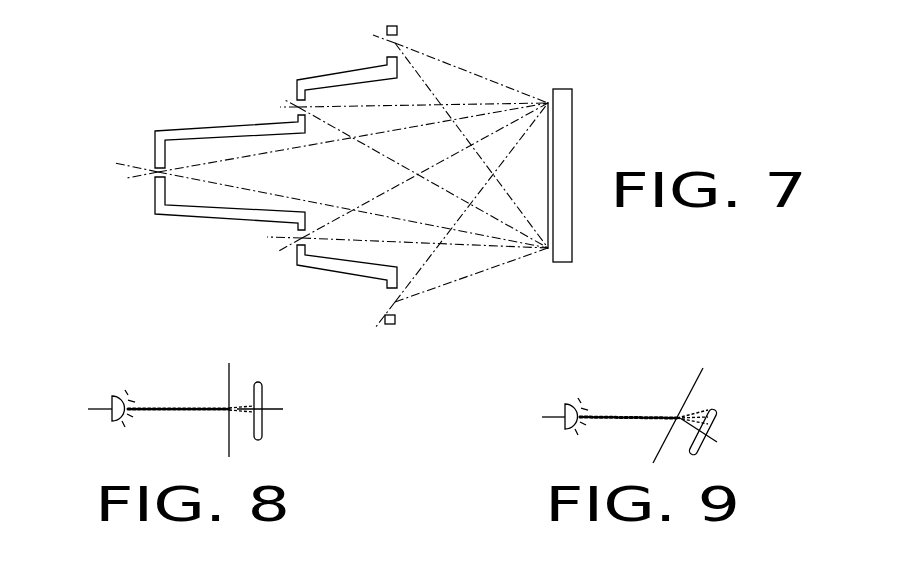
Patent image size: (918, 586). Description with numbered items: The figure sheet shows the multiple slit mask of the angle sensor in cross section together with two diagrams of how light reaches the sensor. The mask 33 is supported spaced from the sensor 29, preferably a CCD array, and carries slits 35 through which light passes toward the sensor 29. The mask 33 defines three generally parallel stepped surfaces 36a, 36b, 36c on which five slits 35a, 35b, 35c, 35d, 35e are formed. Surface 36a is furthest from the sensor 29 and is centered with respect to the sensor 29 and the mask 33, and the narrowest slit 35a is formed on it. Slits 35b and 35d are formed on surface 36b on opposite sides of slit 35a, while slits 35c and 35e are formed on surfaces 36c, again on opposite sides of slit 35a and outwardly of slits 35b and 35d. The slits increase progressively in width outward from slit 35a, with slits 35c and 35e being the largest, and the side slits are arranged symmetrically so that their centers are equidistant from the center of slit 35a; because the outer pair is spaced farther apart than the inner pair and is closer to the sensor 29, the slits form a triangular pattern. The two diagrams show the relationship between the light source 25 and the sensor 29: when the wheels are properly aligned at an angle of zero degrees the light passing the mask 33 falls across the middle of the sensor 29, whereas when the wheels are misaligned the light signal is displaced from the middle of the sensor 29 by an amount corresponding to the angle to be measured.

In FIG. 8, the light source 25 is at (113, 398).
In FIG. 9, the light source 25 is at (565, 412).
In FIG. 7, the sensor 29 is at (576, 90).
In FIG. 8, the sensor 29 is at (259, 398).
In FIG. 9, the sensor 29 is at (722, 403).
In FIG. 7, the mask 33 is at (206, 228).
In FIG. 8, the mask 33 is at (228, 375).
In FIG. 9, the mask 33 is at (695, 383).
In FIG. 7, the slits 35 is at (146, 161).
In FIG. 7, the slit 35a is at (157, 174).
In FIG. 7, the slit 35b is at (296, 107).
In FIG. 7, the slit 35c is at (393, 45).
In FIG. 7, the slit 35d is at (296, 240).
In FIG. 7, the slit 35e is at (390, 303).
In FIG. 7, the surface 36a is at (153, 167).
In FIG. 7, the surface 36b is at (298, 100).
In FIG. 7, the surface 36c is at (386, 30).